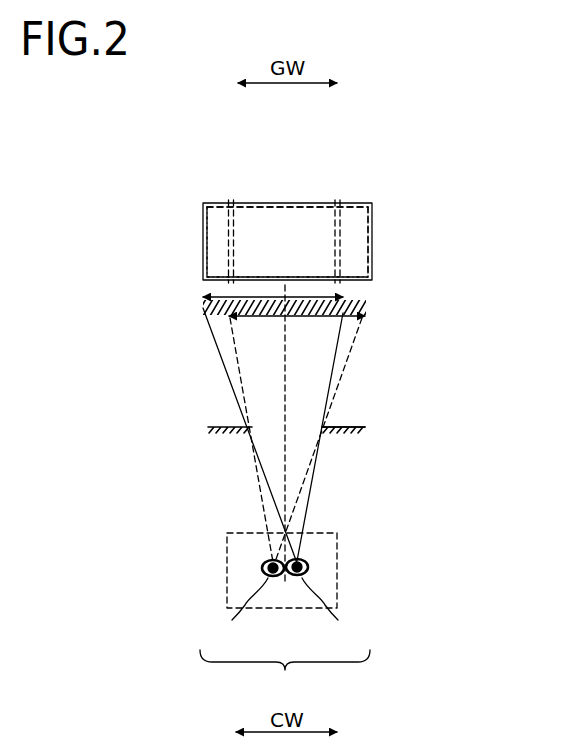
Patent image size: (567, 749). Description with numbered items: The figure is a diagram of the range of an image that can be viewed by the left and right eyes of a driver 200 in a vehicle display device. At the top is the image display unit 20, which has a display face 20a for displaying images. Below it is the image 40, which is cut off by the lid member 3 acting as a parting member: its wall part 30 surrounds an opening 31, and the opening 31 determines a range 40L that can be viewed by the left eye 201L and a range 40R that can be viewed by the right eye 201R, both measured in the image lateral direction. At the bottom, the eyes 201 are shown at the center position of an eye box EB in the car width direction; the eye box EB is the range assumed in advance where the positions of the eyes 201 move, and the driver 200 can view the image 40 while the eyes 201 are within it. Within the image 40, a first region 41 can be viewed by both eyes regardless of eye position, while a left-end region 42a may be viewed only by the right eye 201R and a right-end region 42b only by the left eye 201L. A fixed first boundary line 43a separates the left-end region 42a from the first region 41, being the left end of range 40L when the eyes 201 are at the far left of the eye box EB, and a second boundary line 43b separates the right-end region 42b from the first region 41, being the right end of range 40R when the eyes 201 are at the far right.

The image display unit 20 is at (245, 178).
The display face 20a is at (310, 217).
The image 40 is at (287, 233).
The first region 41 is at (252, 222).
The left-end region 42a is at (218, 222).
The right-end region 42b is at (352, 220).
The first boundary line 43a is at (230, 193).
The second boundary line 43b is at (338, 193).
The range that can be viewed by the right eye 40R is at (210, 298).
The range that can be viewed by the left eye 40L is at (352, 316).
The opening 31 is at (238, 428).
The wall part 30 is at (335, 427).
The lid member 3 is at (358, 422).
The eye box EB is at (227, 553).
The driver 200 is at (305, 551).
The left eye 201L is at (244, 608).
The right eye 201R is at (323, 607).
The eyes 201 is at (285, 675).